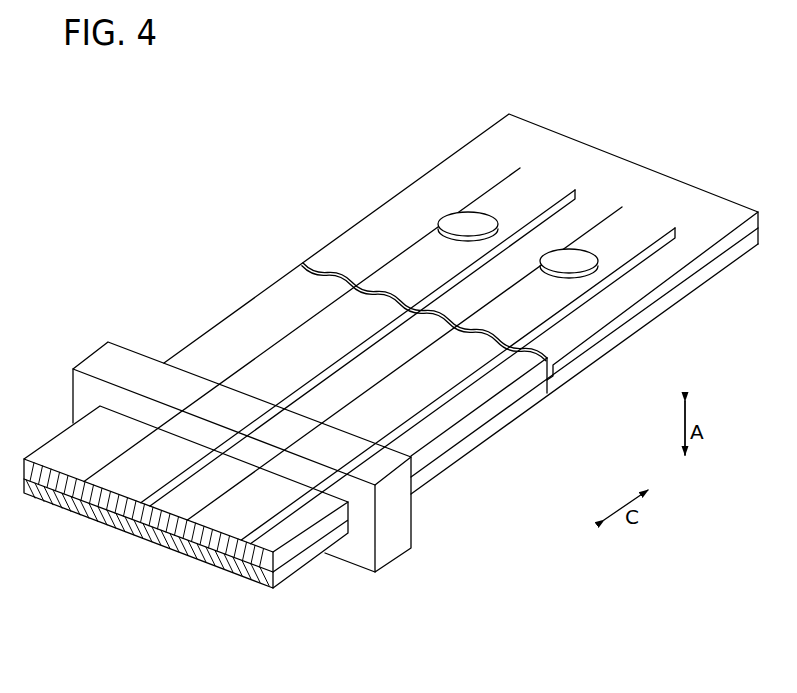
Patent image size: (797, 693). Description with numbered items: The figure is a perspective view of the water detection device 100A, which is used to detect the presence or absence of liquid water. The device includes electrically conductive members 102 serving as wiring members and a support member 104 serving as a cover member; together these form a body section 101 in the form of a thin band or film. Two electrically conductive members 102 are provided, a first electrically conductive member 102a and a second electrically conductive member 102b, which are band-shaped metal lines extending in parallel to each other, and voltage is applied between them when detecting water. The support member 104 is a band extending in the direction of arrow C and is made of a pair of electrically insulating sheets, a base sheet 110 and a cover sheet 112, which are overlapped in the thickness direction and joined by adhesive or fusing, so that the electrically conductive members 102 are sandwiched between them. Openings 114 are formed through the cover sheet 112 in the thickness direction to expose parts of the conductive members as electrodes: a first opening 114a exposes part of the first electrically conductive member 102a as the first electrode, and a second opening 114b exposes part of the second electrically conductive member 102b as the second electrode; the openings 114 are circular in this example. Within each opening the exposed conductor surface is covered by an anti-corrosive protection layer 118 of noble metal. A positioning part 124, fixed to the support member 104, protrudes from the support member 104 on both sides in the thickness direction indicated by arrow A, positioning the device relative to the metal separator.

The water detection device 100A is at (200, 124).
The body section 101 is at (421, 316).
The support member 104 is at (278, 298).
The positioning part 124 is at (133, 364).
The openings 114 is at (531, 183).
The first opening 114a is at (462, 228).
The second opening 114b is at (586, 258).
The protection layer 118 is at (457, 227).
The cover sheet 112 is at (525, 385).
The base sheet 110 is at (482, 430).
The electrically conductive members 102 is at (100, 510).
The first electrically conductive member 102a is at (329, 337).
The second electrically conductive member 102b is at (431, 375).